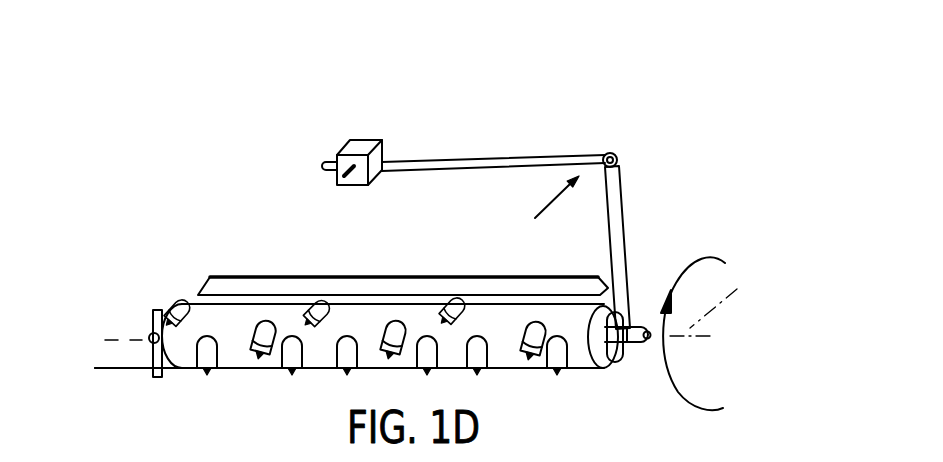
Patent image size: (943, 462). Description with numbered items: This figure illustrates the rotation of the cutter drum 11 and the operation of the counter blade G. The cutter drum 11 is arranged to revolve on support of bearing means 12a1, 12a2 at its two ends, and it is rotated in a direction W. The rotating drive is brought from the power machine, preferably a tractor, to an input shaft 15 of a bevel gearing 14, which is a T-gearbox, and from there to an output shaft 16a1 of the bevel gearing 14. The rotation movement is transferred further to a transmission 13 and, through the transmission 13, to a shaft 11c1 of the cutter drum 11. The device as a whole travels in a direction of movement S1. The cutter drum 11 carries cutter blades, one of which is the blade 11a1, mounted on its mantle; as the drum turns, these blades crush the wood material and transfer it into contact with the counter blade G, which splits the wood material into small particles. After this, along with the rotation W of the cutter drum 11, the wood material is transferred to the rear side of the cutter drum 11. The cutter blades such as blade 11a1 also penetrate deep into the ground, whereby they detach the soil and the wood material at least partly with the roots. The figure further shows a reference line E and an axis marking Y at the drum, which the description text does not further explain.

The cutter drum 11 is at (227, 315).
The cutter blade 11a1 is at (257, 345).
The shaft of the cutter drum 11c1 is at (640, 347).
The bearing means 12a1 is at (153, 336).
The bearing means 12a2 is at (615, 303).
The transmission 13 is at (628, 158).
The bevel gearing 14 is at (368, 140).
The input shaft 15 is at (361, 189).
The output shaft 16a1 is at (482, 162).
The counter blade G is at (352, 283).
The direction of movement S1 is at (529, 197).
The reference plane line E is at (112, 368).
The direction of rotation W is at (705, 256).
The axis of rotation Y is at (711, 304).